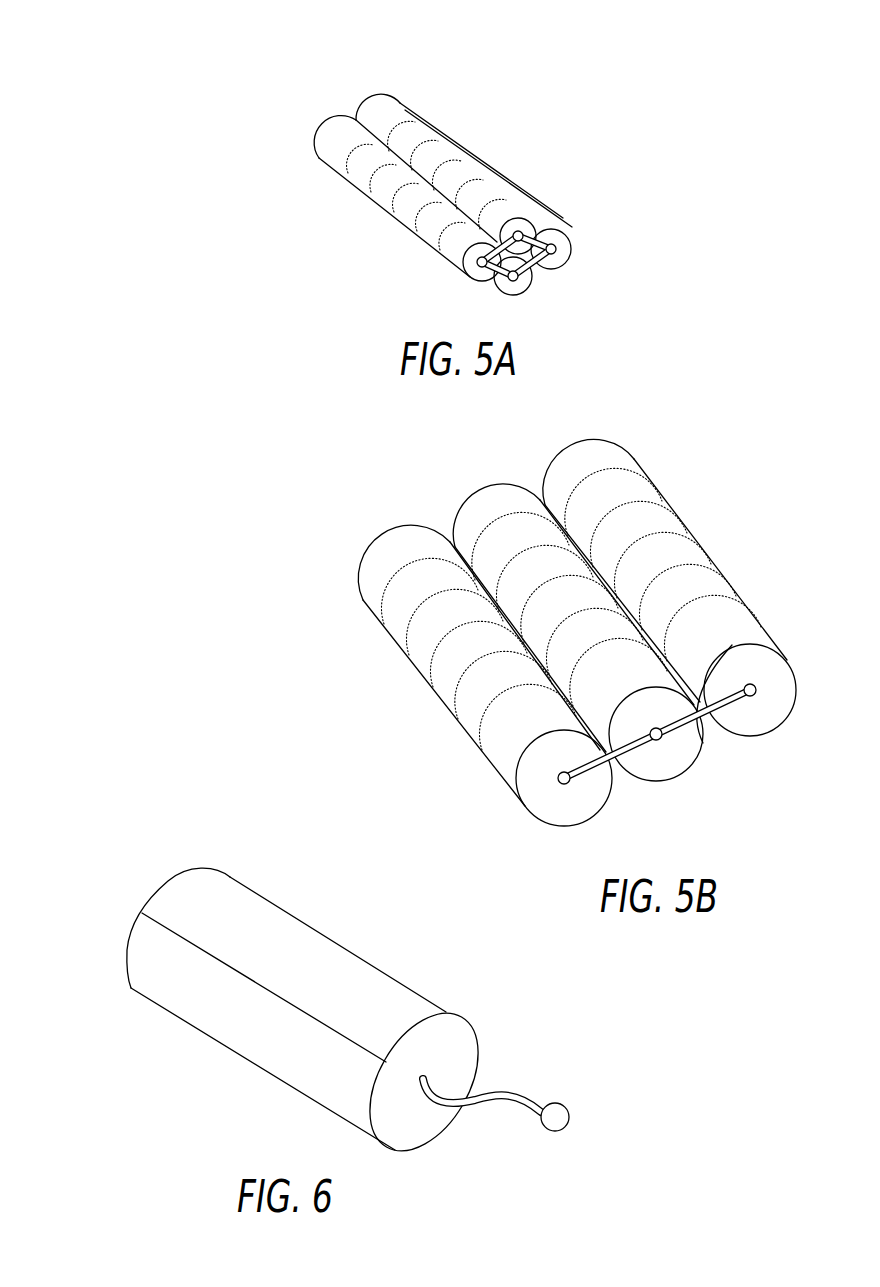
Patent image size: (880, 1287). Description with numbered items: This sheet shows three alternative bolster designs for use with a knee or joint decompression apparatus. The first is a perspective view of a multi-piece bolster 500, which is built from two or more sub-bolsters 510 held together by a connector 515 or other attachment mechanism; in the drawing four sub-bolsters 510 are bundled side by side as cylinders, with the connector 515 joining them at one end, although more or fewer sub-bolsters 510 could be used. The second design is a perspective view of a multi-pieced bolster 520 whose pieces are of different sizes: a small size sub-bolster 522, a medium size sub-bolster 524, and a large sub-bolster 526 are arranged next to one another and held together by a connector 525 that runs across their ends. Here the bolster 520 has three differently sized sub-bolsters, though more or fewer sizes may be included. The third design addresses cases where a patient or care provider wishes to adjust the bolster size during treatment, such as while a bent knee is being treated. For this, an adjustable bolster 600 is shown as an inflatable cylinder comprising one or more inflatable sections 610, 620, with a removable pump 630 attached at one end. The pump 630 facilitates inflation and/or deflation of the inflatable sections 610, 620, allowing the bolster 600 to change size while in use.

In FIG. 5A, the multi-piece bolster 500 is at (296, 97).
In FIG. 5A, the sub-bolster 510 is at (522, 287).
In FIG. 5A, the connector 515 is at (540, 225).
In FIG. 5B, the multi-pieced bolster 520 is at (690, 454).
In FIG. 5B, the small size sub-bolster 522 is at (757, 733).
In FIG. 5B, the medium size sub-bolster 524 is at (665, 778).
In FIG. 5B, the connector 525 is at (736, 650).
In FIG. 5B, the large sub-bolster 526 is at (543, 822).
In FIG. 6, the adjustable bolster 600 is at (171, 840).
In FIG. 6, the inflatable section 610 is at (228, 900).
In FIG. 6, the inflatable section 620 is at (198, 1015).
In FIG. 6, the removable pump 630 is at (528, 1090).